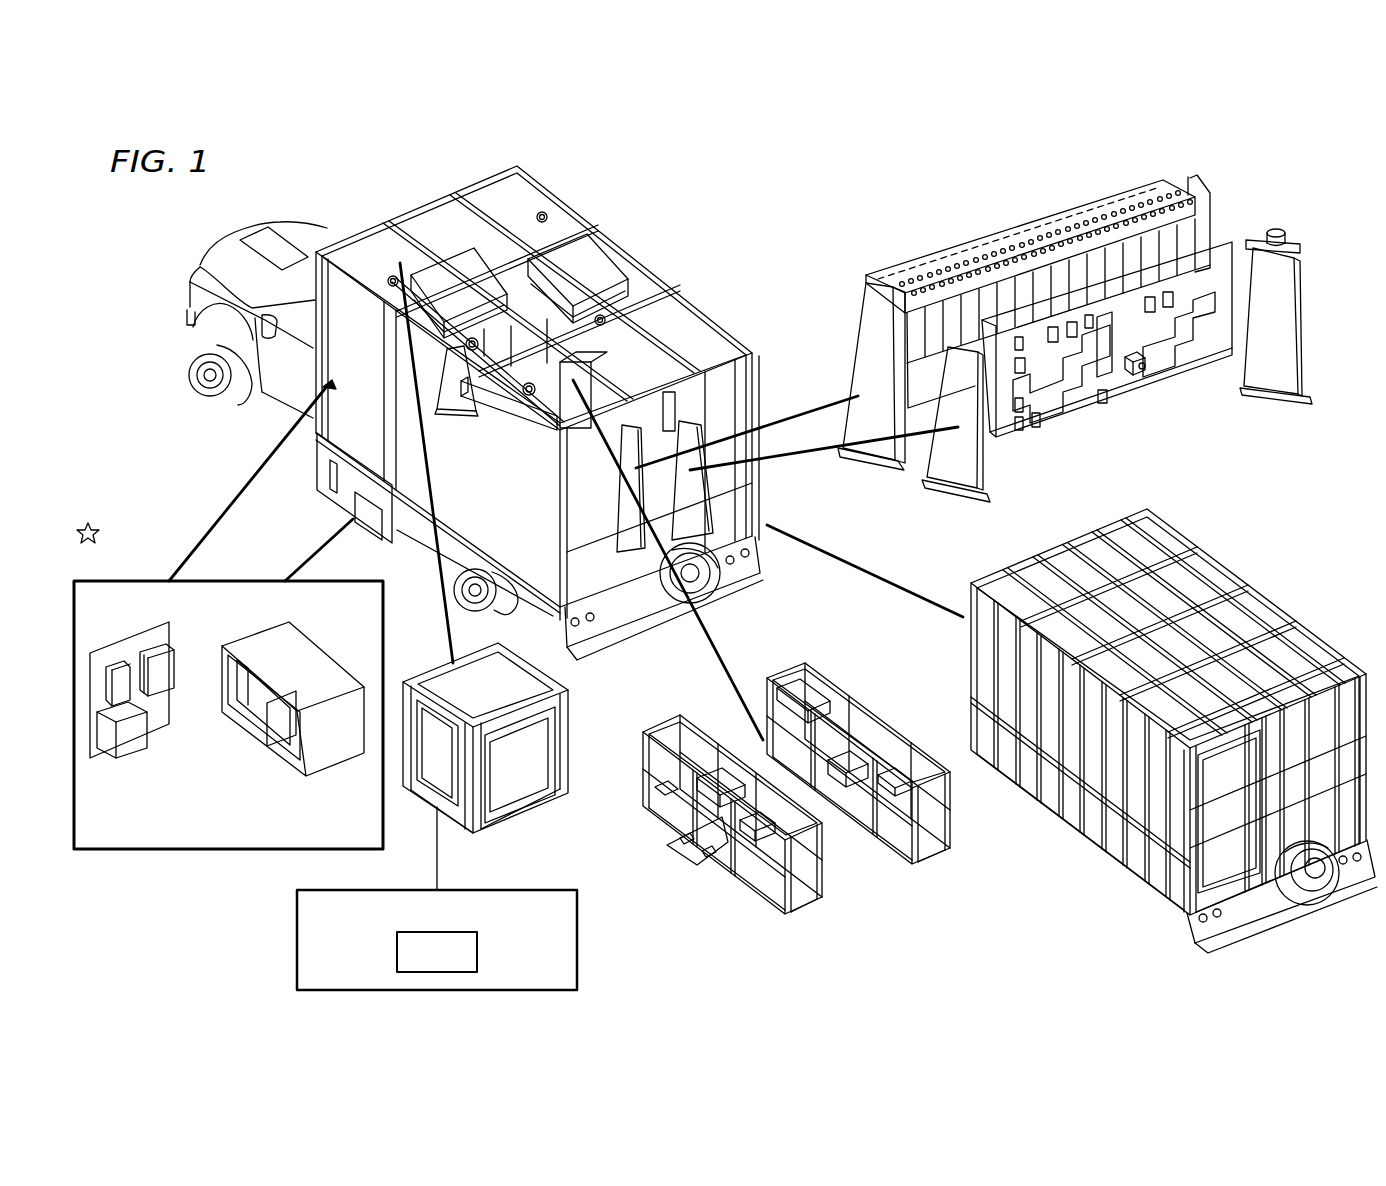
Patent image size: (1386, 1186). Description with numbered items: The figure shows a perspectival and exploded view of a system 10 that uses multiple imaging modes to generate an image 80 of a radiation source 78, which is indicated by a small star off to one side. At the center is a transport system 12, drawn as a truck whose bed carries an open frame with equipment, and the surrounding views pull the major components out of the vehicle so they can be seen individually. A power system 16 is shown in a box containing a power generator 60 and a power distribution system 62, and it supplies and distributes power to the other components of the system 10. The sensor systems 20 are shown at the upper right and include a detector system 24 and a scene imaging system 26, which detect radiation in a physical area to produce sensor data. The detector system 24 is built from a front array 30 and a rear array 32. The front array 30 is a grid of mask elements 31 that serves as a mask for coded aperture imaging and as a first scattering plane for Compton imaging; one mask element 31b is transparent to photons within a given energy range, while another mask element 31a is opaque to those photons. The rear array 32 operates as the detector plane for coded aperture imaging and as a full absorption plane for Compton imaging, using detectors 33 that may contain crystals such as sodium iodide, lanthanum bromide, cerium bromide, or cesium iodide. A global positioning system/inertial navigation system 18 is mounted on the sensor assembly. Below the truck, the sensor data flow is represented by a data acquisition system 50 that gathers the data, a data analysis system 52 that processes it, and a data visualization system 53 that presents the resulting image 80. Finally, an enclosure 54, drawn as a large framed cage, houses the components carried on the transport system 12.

The system 10 is at (401, 190).
The transport system 12 is at (220, 251).
The power system 16 is at (133, 855).
The global positioning system/inertial navigation system 18 is at (1280, 229).
The sensor systems 20 is at (832, 170).
The detector system 24 is at (1305, 243).
The scene imaging system 26 is at (1148, 362).
The front array 30 is at (1037, 423).
The mask elements 31 is at (1215, 310).
The mask element 31a is at (1080, 390).
The mask element 31b is at (1170, 350).
The rear array 32 is at (942, 262).
The detectors 33 is at (1192, 238).
The data acquisition system 50 is at (931, 857).
The data analysis system 52 is at (517, 787).
The data visualization system 53 is at (292, 944).
The enclosure 54 is at (1257, 587).
The power generator 60 is at (311, 656).
The power distribution system 62 is at (158, 722).
The radiation source 78 is at (92, 521).
The image 80 is at (396, 952).